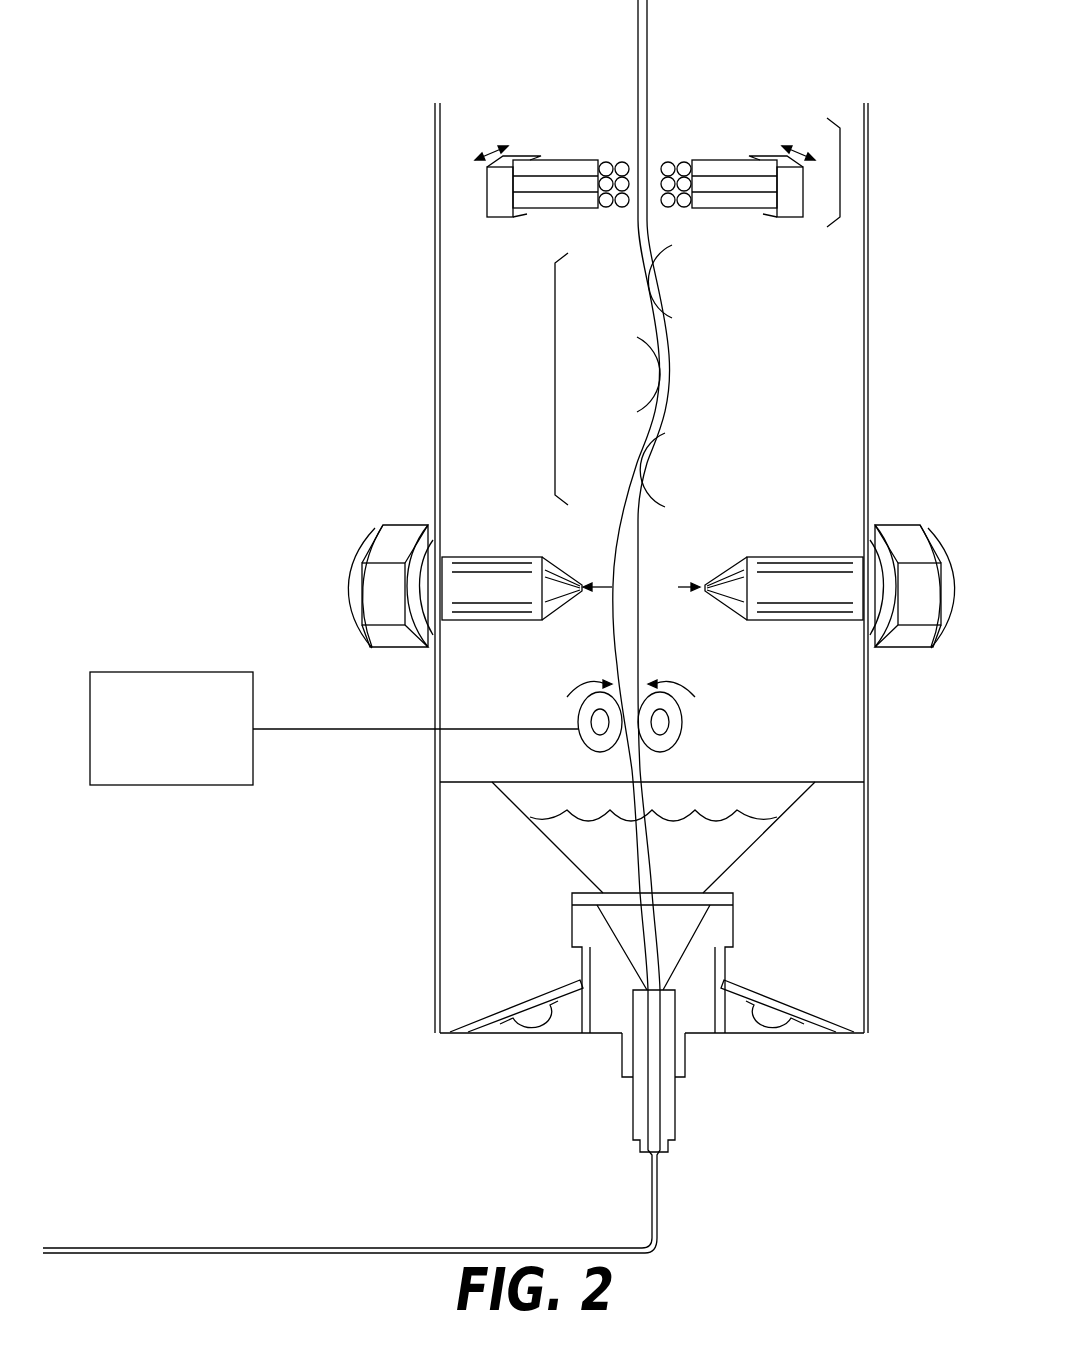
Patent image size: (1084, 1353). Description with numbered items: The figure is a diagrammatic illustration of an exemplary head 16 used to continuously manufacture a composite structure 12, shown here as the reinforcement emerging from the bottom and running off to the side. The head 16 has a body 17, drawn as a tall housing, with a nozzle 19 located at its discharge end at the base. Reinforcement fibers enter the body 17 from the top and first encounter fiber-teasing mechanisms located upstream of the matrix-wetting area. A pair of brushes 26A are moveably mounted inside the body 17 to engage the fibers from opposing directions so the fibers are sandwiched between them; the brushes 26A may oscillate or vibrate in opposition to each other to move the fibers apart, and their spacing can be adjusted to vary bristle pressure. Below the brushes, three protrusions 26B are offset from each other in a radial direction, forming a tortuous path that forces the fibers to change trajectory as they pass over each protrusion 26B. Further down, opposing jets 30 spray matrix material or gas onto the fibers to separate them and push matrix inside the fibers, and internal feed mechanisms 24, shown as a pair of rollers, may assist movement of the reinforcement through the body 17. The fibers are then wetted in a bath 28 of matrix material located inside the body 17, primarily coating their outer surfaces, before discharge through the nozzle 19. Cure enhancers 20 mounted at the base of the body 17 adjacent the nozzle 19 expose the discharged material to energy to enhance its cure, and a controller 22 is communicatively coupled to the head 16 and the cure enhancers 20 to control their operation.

The composite structure 12 is at (212, 1248).
The head 16 is at (208, 418).
The body 17 is at (436, 915).
The nozzle 19 is at (652, 1045).
The cure enhancer 20 is at (560, 1035).
The controller 22 is at (159, 757).
The internal feed mechanism 24 is at (677, 725).
The brushes 26A is at (840, 178).
The protrusions 26B is at (555, 380).
The bath 28 is at (671, 873).
The jets 30 is at (479, 600).